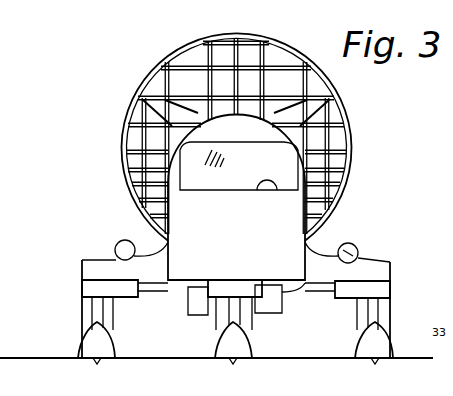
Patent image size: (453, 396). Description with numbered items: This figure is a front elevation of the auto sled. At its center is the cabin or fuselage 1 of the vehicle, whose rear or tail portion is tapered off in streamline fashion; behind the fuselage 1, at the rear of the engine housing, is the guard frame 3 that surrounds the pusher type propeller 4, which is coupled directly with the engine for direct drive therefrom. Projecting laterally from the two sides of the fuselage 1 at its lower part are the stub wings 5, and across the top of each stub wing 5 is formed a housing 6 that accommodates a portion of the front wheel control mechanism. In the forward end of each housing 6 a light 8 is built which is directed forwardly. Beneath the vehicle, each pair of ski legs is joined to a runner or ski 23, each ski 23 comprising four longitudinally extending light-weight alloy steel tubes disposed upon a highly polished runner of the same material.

The cabin or fuselage 1 is at (206, 133).
The guard frame 3 is at (348, 121).
The pusher type propeller 4 is at (180, 103).
The stub wing 5 is at (383, 272).
The housing 6 is at (121, 242).
The light 8 is at (357, 254).
The runner or ski 23 is at (106, 348).